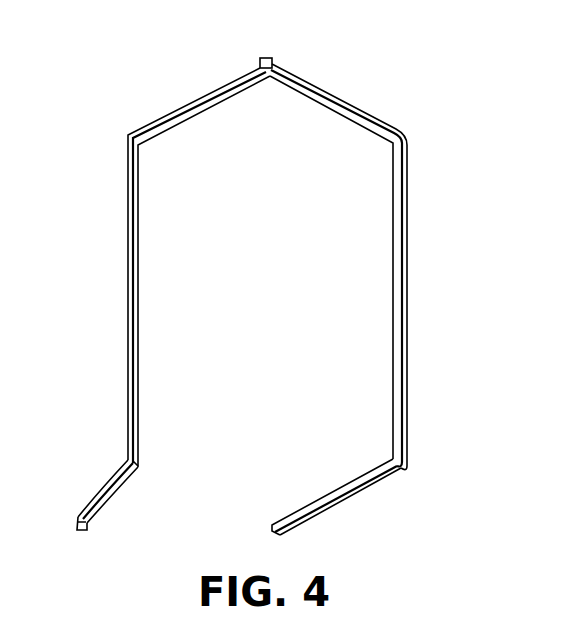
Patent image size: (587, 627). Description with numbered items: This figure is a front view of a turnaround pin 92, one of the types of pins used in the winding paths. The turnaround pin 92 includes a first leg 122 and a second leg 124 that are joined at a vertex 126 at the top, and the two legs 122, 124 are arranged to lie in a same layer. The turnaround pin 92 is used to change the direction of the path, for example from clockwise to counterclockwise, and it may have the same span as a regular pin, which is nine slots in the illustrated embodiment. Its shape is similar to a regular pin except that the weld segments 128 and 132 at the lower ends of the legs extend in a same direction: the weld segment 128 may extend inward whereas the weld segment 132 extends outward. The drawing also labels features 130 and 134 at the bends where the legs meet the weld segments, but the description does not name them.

The turnaround pin 92 is at (345, 56).
The first leg 122 is at (400, 278).
The second leg 124 is at (130, 313).
The vertex 126 is at (266, 57).
The weld segment 128 is at (343, 502).
The first bend 130 is at (395, 460).
The weld segment 132 is at (107, 478).
The second bend 134 is at (140, 466).